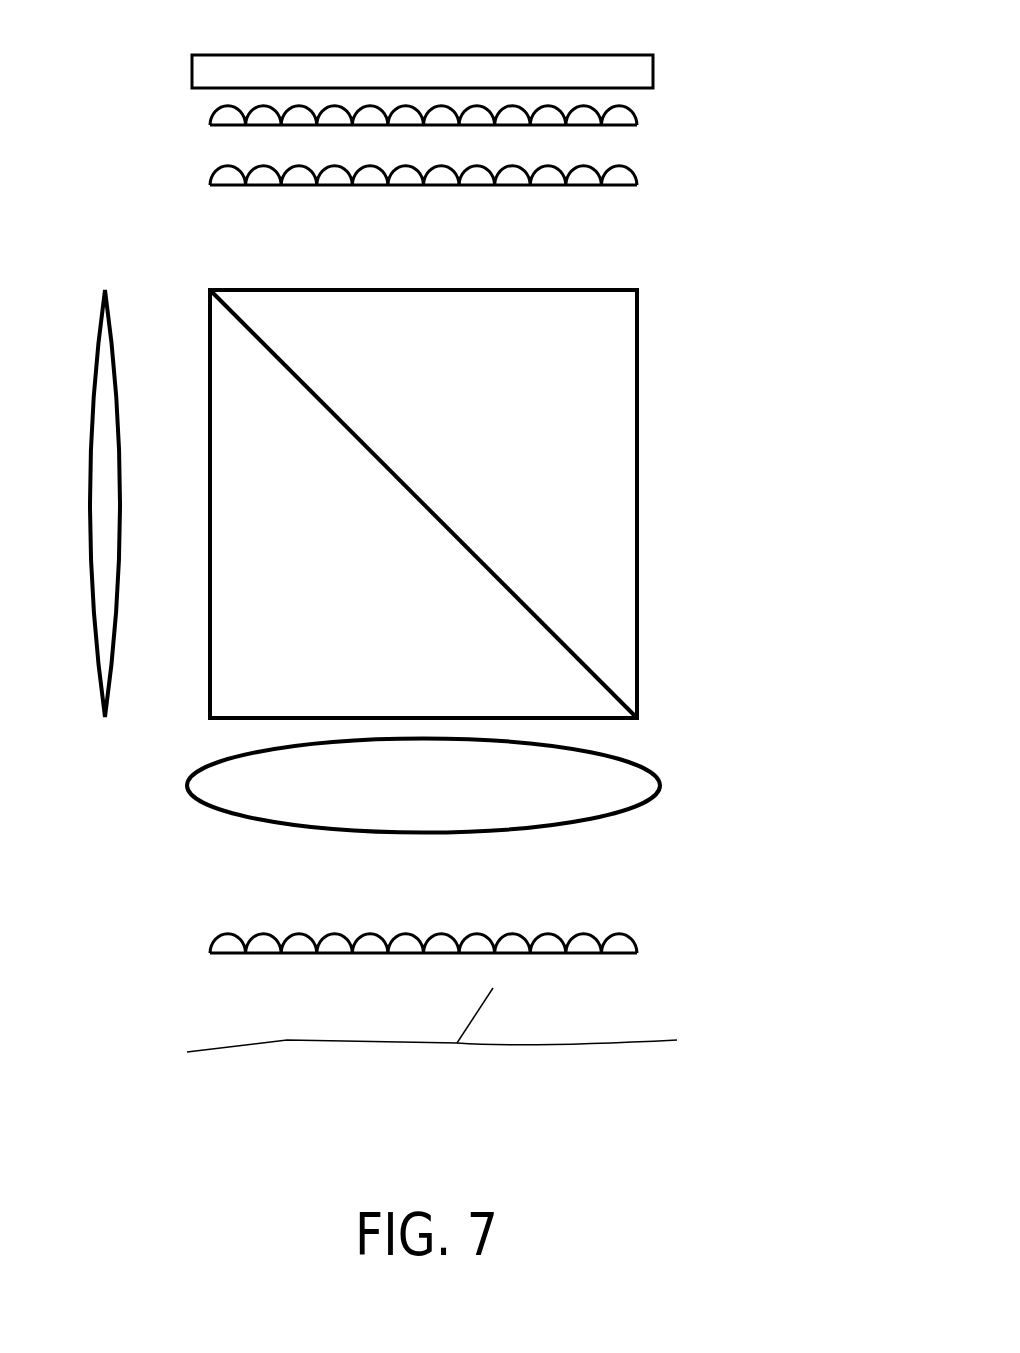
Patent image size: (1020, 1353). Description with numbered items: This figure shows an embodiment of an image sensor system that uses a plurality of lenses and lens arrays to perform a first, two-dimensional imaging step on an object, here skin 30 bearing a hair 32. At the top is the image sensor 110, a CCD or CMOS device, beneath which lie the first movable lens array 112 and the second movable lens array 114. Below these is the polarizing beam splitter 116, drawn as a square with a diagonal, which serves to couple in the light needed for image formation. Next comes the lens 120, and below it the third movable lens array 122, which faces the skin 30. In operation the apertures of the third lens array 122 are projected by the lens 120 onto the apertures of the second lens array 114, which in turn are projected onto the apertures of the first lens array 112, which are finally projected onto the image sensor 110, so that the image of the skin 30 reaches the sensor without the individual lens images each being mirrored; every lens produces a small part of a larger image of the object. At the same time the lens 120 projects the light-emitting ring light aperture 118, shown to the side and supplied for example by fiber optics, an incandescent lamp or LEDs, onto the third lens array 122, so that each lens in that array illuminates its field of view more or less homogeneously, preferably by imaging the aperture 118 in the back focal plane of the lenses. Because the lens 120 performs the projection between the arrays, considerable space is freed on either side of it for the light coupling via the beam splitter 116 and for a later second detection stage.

The image sensor 110 is at (653, 75).
The first movable lens array 112 is at (637, 117).
The second movable lens array 114 is at (637, 177).
The polarizing beam splitter 116 is at (637, 480).
The ring light aperture 118 is at (97, 685).
The lens 120 is at (660, 785).
The third movable lens array 122 is at (637, 945).
The skin 30 is at (635, 1043).
The hair 32 is at (485, 1005).